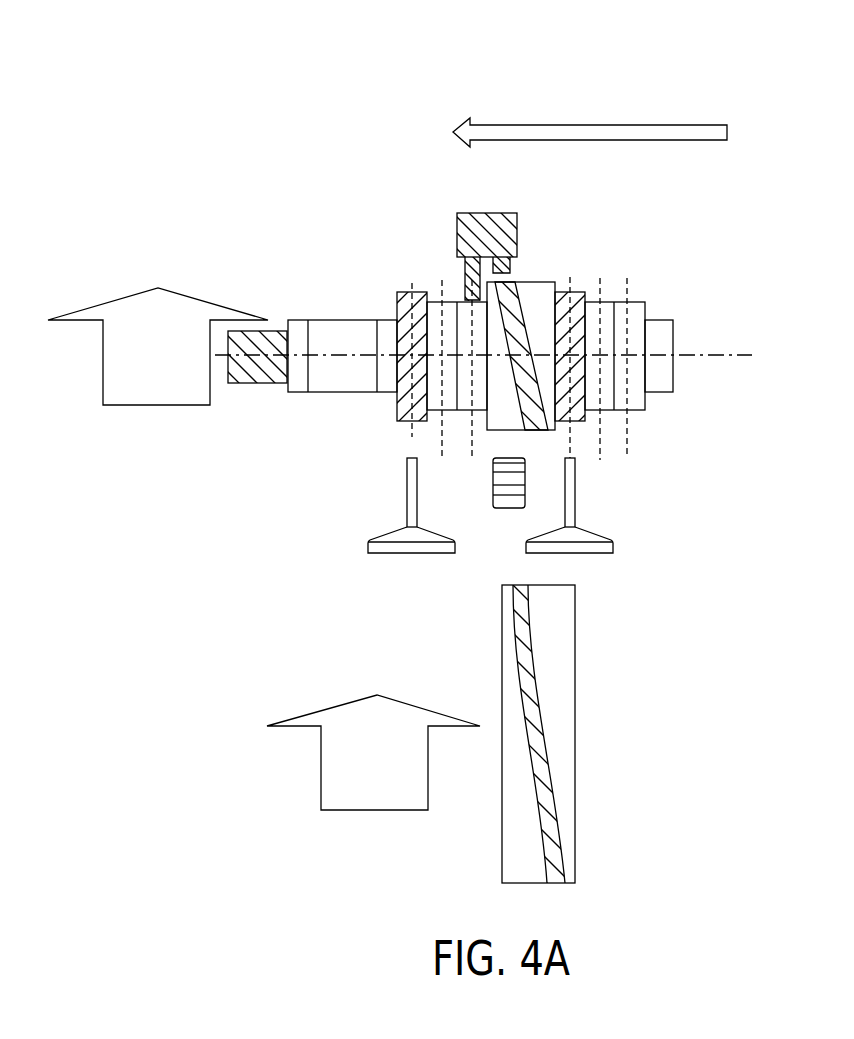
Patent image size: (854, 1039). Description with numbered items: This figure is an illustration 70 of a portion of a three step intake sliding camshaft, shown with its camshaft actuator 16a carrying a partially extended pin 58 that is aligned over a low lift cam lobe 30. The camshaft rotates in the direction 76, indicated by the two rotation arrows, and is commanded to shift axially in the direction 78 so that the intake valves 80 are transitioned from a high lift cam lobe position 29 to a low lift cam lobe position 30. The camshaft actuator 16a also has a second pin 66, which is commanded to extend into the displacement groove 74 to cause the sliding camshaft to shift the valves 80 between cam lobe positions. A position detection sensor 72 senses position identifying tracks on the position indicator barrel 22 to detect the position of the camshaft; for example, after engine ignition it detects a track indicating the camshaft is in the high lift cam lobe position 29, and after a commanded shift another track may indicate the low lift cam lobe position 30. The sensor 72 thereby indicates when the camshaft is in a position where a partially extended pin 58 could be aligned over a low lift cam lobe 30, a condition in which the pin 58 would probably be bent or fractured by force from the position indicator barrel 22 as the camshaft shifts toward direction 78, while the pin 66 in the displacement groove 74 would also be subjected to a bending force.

The illustration 70 is at (284, 100).
The direction 78 is at (620, 125).
The direction 76 is at (103, 372).
The high lift cam lobe position 29 is at (403, 292).
The low lift cam lobe 30 is at (448, 294).
The position indicator barrel 22 is at (541, 282).
The partially extended pin 58 is at (463, 275).
The pin 66 is at (518, 268).
The camshaft actuator 16a is at (484, 213).
The position detection sensor 72 is at (493, 483).
The intake valves 80 is at (407, 500).
The displacement groove 74 is at (540, 695).